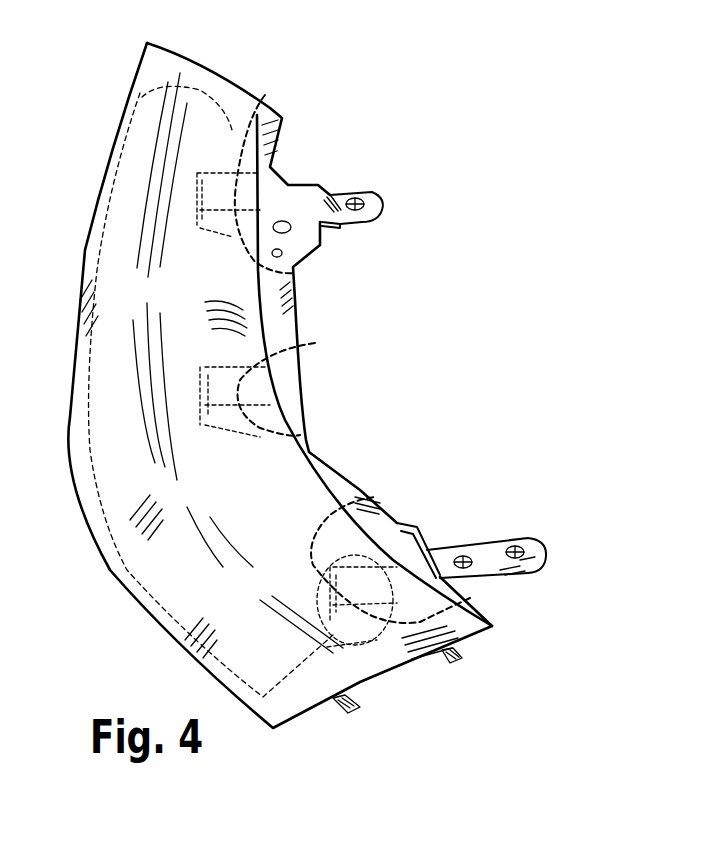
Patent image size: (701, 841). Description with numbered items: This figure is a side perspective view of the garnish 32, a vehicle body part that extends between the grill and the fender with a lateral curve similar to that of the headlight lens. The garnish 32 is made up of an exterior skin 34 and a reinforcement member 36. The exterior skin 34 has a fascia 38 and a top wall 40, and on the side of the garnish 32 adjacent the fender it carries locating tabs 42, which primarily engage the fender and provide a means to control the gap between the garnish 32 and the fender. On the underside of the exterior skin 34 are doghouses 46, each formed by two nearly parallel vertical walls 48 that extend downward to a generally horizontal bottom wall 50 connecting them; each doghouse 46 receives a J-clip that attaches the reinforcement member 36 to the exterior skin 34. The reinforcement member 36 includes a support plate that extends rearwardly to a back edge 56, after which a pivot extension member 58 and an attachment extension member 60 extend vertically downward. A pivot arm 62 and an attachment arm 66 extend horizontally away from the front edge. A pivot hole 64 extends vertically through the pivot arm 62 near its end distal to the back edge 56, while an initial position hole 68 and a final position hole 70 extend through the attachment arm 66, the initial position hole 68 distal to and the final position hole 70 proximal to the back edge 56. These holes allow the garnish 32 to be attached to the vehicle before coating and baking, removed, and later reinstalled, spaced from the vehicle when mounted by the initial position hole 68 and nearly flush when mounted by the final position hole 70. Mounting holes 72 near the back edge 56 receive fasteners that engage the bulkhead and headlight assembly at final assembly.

The garnish 32 is at (485, 158).
The exterior skin 34 is at (490, 622).
The reinforcement member 36 is at (292, 370).
The fascia 38 is at (302, 688).
The top wall 40 is at (400, 645).
The locating tabs 42 is at (462, 663).
The doghouse 46 is at (180, 198).
The vertical walls 48 is at (265, 95).
The bottom wall 50 is at (230, 187).
The back edge 56 is at (318, 317).
The pivot extension member 58 is at (332, 195).
The attachment extension member 60 is at (420, 535).
The pivot arm 62 is at (386, 206).
The pivot hole 64 is at (362, 200).
The attachment arm 66 is at (498, 553).
The initial position hole 68 is at (530, 552).
The final position hole 70 is at (466, 557).
The mounting holes 72 is at (290, 228).